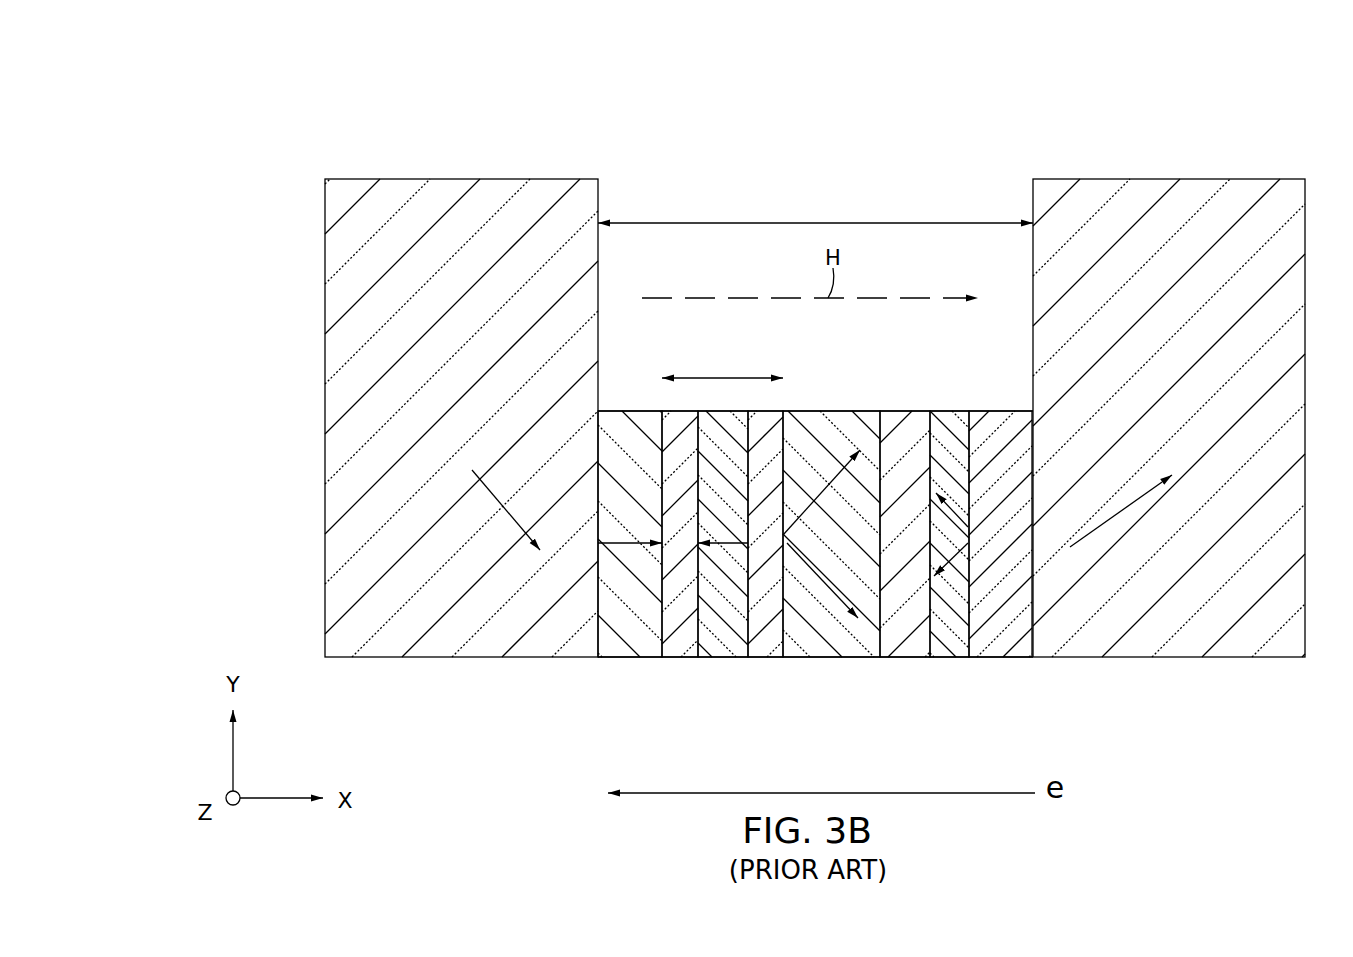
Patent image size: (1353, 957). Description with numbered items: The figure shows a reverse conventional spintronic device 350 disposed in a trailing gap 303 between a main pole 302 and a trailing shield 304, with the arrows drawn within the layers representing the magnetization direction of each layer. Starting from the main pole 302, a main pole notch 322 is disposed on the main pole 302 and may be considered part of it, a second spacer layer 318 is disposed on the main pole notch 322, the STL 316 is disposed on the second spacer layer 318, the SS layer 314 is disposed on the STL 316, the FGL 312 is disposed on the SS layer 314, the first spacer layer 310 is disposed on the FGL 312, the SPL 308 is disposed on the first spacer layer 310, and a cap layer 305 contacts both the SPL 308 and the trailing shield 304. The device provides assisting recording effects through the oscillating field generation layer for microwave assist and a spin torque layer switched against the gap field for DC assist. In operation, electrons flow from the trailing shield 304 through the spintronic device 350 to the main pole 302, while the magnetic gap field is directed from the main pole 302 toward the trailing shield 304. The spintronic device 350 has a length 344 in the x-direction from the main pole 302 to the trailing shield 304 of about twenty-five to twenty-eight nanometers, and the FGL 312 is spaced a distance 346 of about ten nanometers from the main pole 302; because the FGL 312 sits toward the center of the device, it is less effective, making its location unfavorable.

The reverse conventional spintronic device 350 is at (315, 73).
The trailing gap 303 is at (622, 152).
The length 344 is at (805, 223).
The distance 346 is at (715, 378).
The main pole 302 is at (440, 425).
The trailing shield 304 is at (1145, 432).
The main pole notch 322 is at (652, 600).
The second spacer layer 318 is at (681, 632).
The STL 316 is at (722, 632).
The SS layer 314 is at (768, 632).
The FGL 312 is at (820, 552).
The first spacer layer 310 is at (903, 420).
The SPL 308 is at (942, 632).
The cap layer 305 is at (982, 618).